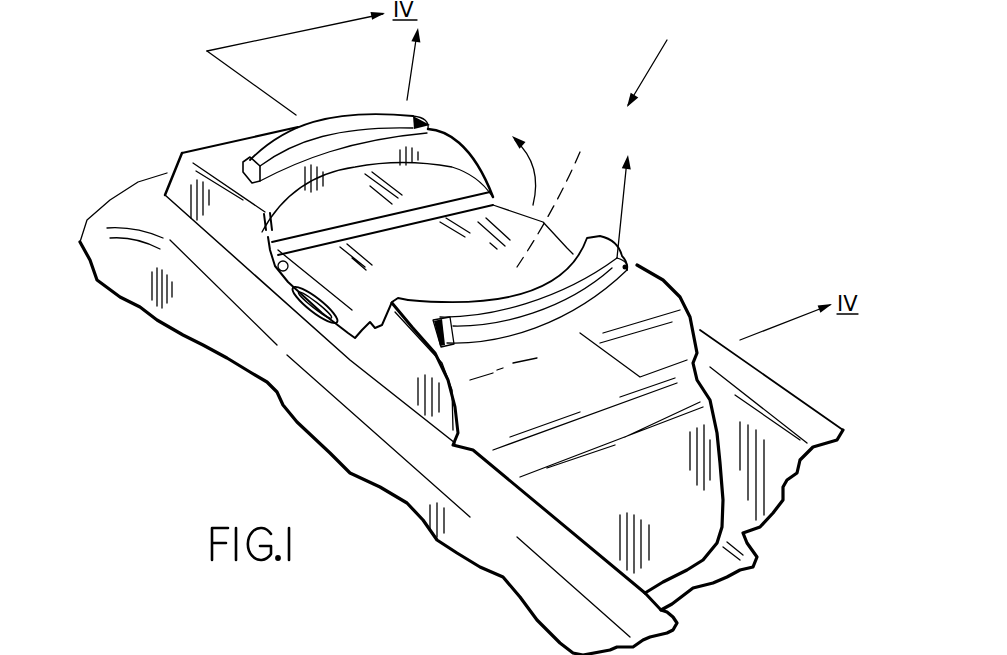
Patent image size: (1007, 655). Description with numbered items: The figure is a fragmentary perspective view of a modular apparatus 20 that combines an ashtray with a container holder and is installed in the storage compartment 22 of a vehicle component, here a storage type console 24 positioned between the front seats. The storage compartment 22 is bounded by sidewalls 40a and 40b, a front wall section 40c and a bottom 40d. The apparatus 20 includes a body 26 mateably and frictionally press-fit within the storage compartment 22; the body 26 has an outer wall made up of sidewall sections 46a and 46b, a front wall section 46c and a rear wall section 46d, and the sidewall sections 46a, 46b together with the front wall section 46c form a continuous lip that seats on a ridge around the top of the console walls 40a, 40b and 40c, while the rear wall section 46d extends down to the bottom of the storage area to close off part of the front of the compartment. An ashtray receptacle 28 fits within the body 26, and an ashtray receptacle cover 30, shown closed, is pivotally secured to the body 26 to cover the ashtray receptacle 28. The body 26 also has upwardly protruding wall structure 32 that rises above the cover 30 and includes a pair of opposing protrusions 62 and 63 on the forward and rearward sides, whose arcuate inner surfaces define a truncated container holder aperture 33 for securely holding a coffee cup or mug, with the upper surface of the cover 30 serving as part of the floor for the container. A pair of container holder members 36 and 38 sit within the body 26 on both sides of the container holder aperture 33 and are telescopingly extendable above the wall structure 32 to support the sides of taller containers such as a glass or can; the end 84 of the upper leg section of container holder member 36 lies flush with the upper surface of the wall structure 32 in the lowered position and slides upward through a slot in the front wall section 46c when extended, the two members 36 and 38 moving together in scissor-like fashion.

The modular apparatus 20 is at (662, 64).
The storage compartment 22 is at (763, 467).
The storage type console 24 is at (817, 413).
The body 26 is at (688, 295).
The ashtray receptacle 28 is at (554, 197).
The ashtray receptacle cover 30 is at (429, 262).
The wall structure 32 is at (413, 377).
The container holder aperture 33 is at (432, 175).
The container holder member 36 is at (655, 262).
The container holder member 38 is at (414, 114).
The sidewall 40a is at (521, 516).
The sidewall 40b is at (770, 390).
The front wall section 40c is at (143, 197).
The bottom 40d is at (693, 588).
The sidewall section 46a is at (358, 357).
The sidewall section 46b is at (663, 260).
The front wall section 46c is at (213, 145).
The rear wall section 46d is at (607, 470).
The protrusion 62 is at (407, 367).
The protrusion 63 is at (238, 224).
The end of upper leg section 84 is at (515, 320).